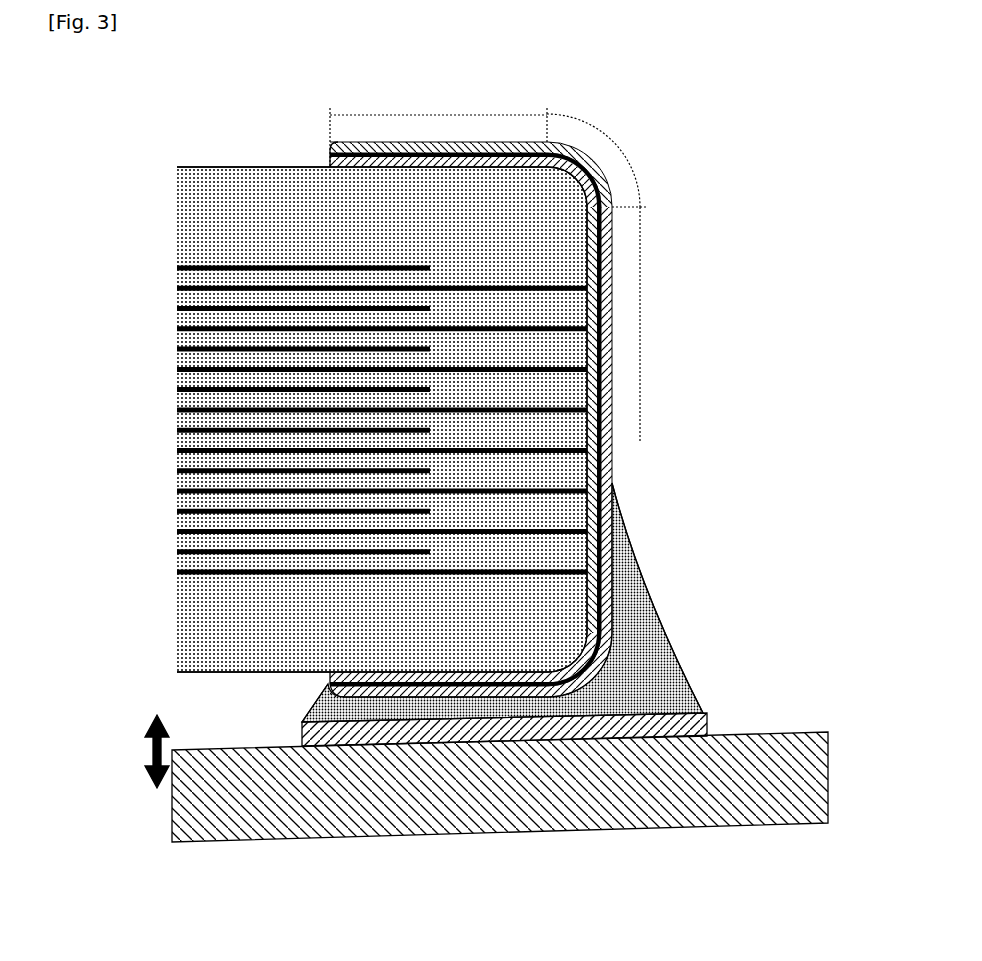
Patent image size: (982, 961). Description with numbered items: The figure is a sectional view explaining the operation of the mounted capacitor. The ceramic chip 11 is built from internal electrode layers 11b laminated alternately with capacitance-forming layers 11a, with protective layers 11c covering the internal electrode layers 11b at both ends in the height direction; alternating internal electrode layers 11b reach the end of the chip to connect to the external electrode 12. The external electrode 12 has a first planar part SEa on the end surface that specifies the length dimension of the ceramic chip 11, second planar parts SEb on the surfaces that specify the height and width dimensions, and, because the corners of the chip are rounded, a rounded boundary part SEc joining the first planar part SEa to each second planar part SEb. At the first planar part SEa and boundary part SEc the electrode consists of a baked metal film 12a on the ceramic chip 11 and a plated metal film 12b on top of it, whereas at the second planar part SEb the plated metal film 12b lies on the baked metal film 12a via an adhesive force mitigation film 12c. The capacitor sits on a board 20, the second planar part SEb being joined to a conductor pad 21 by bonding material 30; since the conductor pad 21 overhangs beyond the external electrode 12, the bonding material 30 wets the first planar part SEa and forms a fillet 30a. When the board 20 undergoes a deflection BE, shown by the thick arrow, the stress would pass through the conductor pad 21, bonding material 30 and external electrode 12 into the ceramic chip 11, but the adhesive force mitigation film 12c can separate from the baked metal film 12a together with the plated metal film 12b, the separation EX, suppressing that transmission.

The ceramic chip 11 is at (243, 165).
The capacitance-forming layers 11a is at (178, 324).
The internal electrode layers 11b is at (178, 268).
The protective layers 11c is at (178, 212).
The external electrode 12 is at (613, 373).
The baked metal film 12a is at (613, 322).
The plated metal film 12b is at (613, 272).
The adhesive force mitigation film 12c is at (500, 142).
The board 20 is at (426, 834).
The conductor pad 21 is at (496, 735).
The bonding material 30 is at (568, 717).
The fillet 30a is at (643, 565).
The separation EX is at (317, 690).
The deflection BE is at (140, 751).
The first planar part SEa is at (647, 325).
The second planar part SEb is at (438, 129).
The boundary part SEc is at (598, 160).